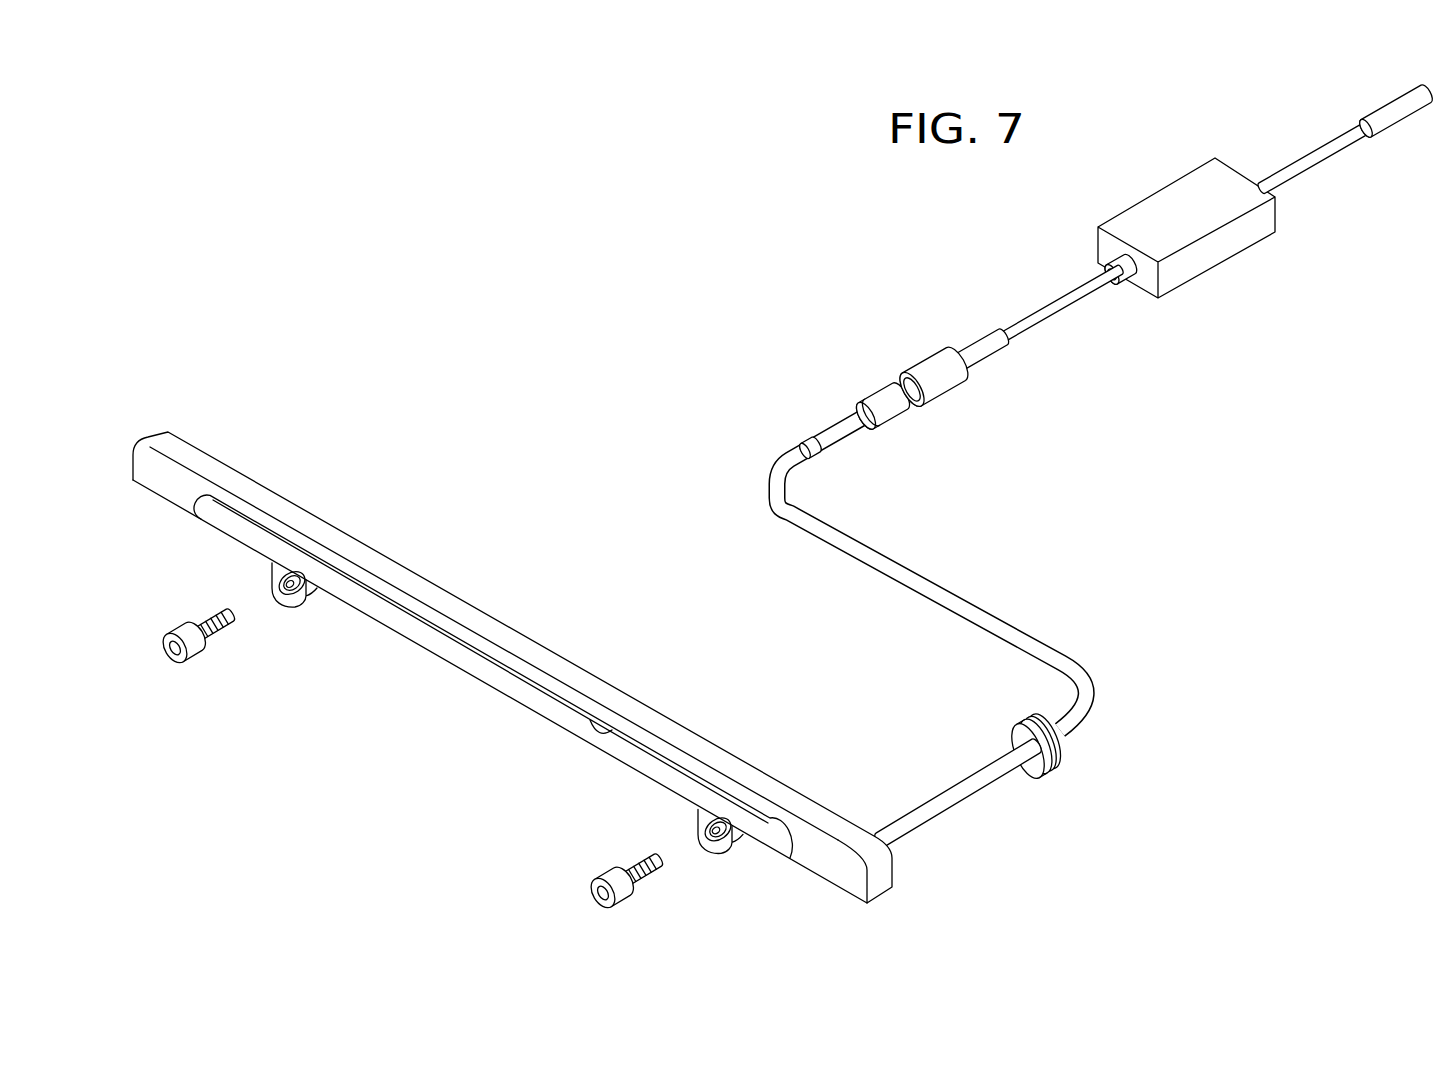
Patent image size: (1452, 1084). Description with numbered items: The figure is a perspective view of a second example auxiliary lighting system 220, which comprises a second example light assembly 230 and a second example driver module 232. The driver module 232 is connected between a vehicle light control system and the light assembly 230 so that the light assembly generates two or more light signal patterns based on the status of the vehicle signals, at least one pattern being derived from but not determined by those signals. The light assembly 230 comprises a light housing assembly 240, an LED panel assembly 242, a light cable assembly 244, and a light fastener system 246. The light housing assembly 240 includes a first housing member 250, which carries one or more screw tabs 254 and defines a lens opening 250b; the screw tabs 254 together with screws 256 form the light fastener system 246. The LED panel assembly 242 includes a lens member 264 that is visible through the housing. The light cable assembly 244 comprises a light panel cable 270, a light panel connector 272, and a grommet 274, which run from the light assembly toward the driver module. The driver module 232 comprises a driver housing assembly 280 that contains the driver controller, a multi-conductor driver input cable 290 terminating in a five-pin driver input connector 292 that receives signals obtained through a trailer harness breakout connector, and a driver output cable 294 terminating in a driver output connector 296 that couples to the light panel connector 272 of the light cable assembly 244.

The auxiliary lighting system 220 is at (1169, 584).
The light assembly 230 is at (1107, 814).
The driver module 232 is at (1268, 294).
The light housing assembly 240 is at (512, 667).
The LED panel assembly 242 is at (468, 664).
The light cable assembly 244 is at (1108, 664).
The light fastener system 246 is at (473, 730).
The first housing member 250 is at (493, 632).
The lens opening 250b is at (605, 728).
The screw tabs 254 is at (295, 607).
The screws 256 is at (222, 636).
The lens member 264 is at (533, 698).
The light panel cable 270 is at (923, 590).
The light panel connector 272 is at (882, 412).
The grommet 274 is at (1018, 737).
The driver housing assembly 280 is at (1240, 232).
The driver input cable 290 is at (1305, 160).
The driver input connector 292 is at (1392, 104).
The driver output cable 294 is at (1063, 303).
The driver output connector 296 is at (940, 388).